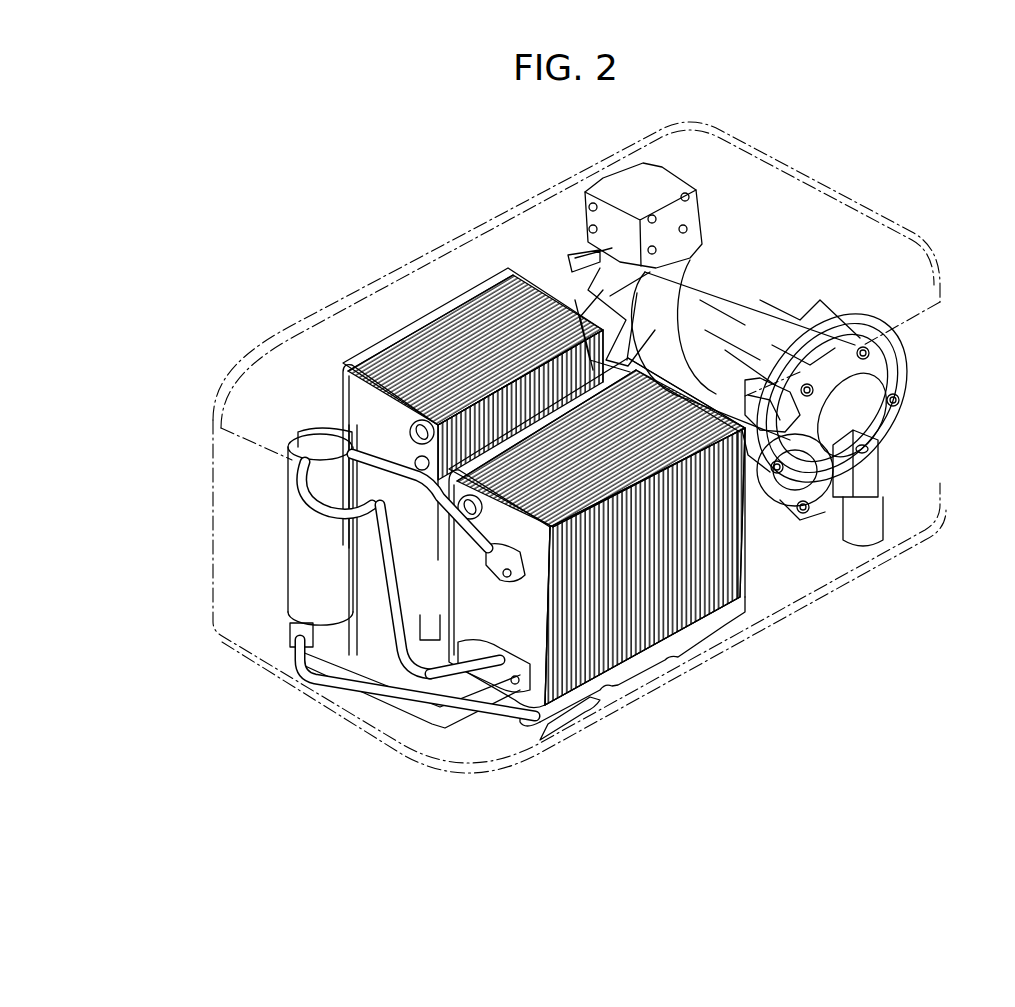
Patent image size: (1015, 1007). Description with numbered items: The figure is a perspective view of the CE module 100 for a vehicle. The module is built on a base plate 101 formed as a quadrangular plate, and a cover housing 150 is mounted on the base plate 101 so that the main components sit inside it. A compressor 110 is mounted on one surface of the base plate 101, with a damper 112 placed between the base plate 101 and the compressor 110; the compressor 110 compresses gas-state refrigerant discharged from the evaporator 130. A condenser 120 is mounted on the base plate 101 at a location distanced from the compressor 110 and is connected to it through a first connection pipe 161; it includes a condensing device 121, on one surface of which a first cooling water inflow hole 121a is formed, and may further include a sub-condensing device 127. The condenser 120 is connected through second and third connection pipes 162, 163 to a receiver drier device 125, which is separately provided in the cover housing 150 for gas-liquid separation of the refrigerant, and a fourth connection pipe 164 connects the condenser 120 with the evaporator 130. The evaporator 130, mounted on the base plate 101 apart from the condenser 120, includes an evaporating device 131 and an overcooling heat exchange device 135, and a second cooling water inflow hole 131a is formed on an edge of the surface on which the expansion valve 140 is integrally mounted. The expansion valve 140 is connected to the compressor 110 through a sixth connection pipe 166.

The CE module 100 is at (428, 114).
The base plate 101 is at (455, 742).
The compressor 110 is at (773, 310).
The damper 112 is at (875, 515).
The condenser 120 is at (760, 613).
The condensing device 121 is at (668, 662).
The first cooling water inflow hole 121a is at (628, 655).
The receiver drier device 125 is at (300, 577).
The sub-condensing device 127 is at (582, 713).
The evaporator 130 is at (365, 226).
The evaporating device 131 is at (415, 297).
The second cooling water inflow hole 131a is at (400, 432).
The overcooling heat exchange device 135 is at (348, 340).
The expansion valve 140 is at (385, 567).
The cover housing 150 is at (805, 170).
The first connection pipe 161 is at (875, 362).
The second connection pipe 162 is at (395, 655).
The third connection pipe 163 is at (345, 685).
The fourth connection pipe 164 is at (495, 652).
The sixth connection pipe 166 is at (387, 470).